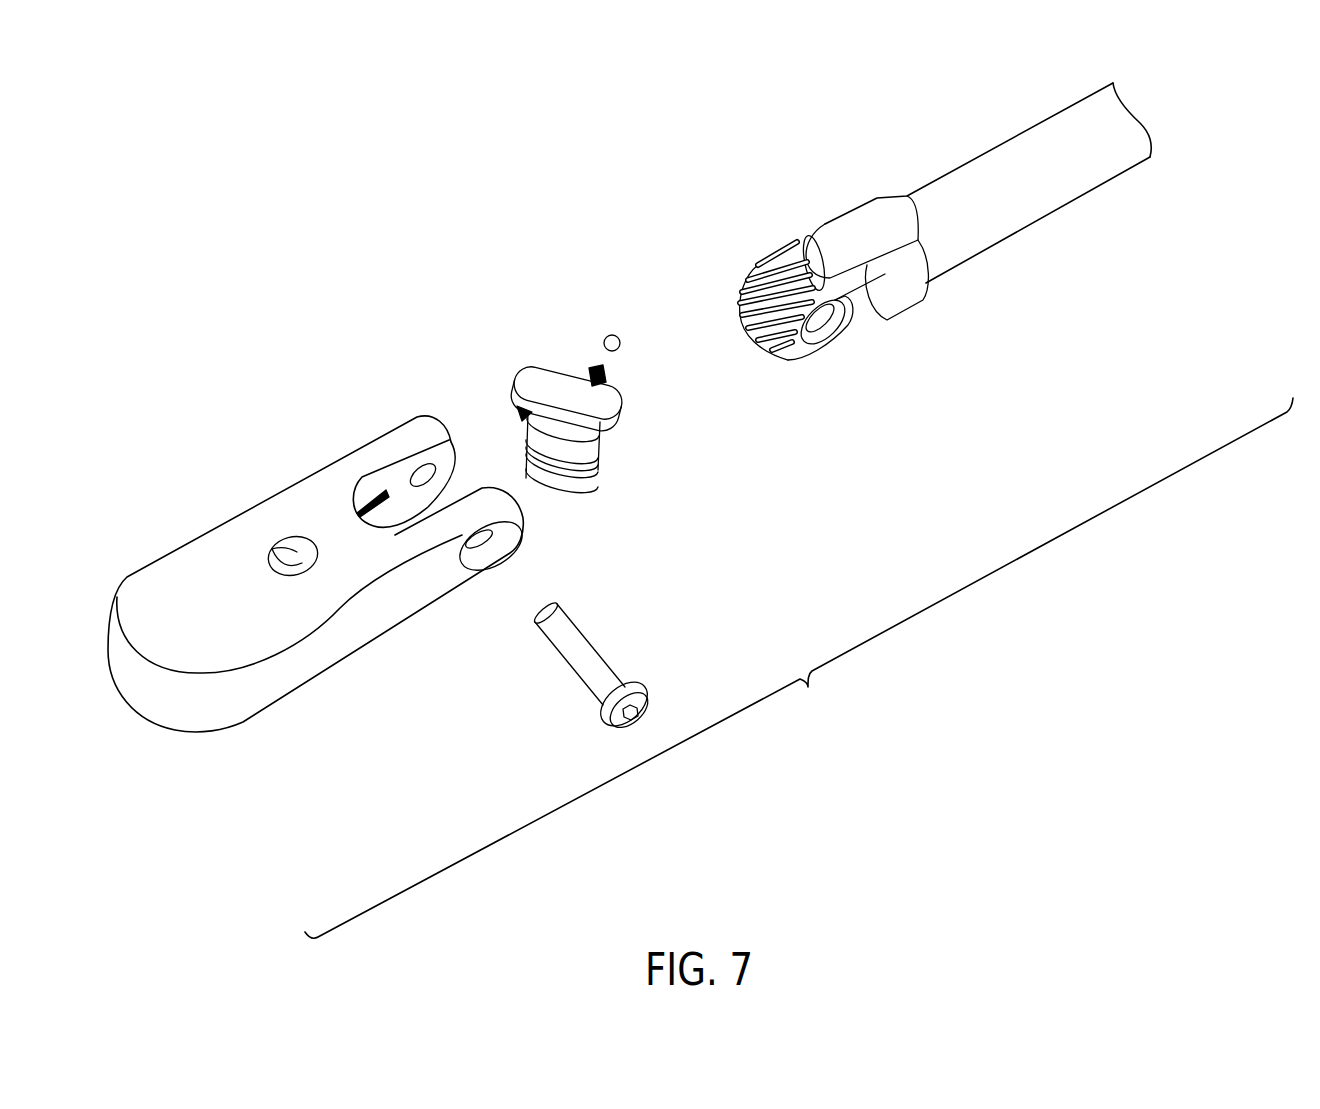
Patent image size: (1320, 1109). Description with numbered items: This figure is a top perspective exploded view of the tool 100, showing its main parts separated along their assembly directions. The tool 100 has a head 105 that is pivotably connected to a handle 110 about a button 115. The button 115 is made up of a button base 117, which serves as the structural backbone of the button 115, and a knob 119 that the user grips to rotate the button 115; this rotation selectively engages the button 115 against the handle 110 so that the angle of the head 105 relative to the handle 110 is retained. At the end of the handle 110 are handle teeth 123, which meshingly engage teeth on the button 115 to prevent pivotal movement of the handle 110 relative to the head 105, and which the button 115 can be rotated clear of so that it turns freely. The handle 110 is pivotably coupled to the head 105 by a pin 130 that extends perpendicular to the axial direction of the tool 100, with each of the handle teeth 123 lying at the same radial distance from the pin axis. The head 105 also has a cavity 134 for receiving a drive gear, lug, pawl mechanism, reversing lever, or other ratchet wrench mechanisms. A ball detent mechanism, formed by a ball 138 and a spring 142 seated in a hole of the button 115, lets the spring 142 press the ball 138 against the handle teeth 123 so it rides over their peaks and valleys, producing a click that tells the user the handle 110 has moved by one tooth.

The tool 100 is at (178, 140).
The head 105 is at (159, 563).
The handle 110 is at (1002, 170).
The button 115 is at (518, 412).
The button base 117 is at (597, 443).
The knob 119 is at (550, 378).
The handle teeth 123 is at (802, 257).
The pin 130 is at (577, 643).
The cavity 134 is at (293, 574).
The ball 138 is at (614, 334).
The spring 142 is at (606, 382).